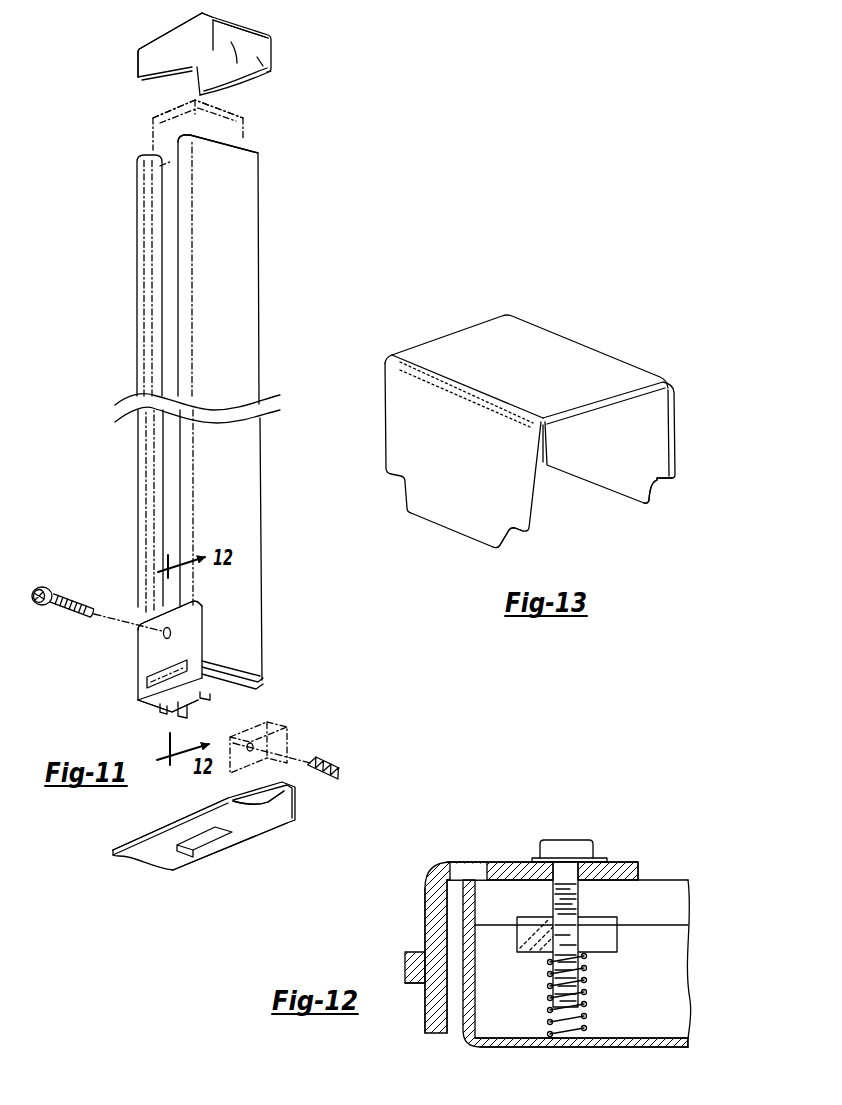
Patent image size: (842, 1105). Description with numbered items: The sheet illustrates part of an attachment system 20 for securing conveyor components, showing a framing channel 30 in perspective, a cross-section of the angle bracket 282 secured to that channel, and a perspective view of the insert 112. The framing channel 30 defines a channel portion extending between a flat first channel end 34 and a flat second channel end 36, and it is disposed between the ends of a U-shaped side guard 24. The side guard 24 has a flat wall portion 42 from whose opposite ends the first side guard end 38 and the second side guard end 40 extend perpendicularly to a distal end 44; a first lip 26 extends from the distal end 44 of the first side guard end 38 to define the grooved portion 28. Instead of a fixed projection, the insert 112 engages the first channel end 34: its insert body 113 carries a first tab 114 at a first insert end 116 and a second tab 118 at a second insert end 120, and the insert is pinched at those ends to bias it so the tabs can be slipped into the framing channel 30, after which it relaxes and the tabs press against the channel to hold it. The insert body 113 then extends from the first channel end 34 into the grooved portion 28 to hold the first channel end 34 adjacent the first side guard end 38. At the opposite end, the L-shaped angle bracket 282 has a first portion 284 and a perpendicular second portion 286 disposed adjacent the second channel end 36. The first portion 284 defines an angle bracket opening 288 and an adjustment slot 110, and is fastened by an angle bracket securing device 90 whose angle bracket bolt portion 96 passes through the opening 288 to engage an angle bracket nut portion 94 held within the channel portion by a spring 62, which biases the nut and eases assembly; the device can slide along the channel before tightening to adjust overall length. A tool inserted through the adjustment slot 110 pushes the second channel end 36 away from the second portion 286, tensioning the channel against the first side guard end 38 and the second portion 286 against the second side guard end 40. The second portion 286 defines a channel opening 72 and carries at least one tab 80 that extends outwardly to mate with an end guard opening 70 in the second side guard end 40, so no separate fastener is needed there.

In FIG. 11, the attachment system 20 is at (96, 371).
In FIG. 11, the side guard 24 is at (275, 40).
In FIG. 11, the first lip 26 is at (140, 60).
In FIG. 11, the grooved portion 28 is at (230, 44).
In FIG. 11, the framing channel 30 is at (247, 334).
In FIG. 12, the framing channel 30 is at (652, 880).
In FIG. 11, the first channel end 34 is at (260, 152).
In FIG. 11, the second channel end 36 is at (256, 682).
In FIG. 12, the second channel end 36 is at (463, 1046).
In FIG. 11, the first side guard end 38 is at (233, 32).
In FIG. 11, the second side guard end 40 is at (263, 822).
In FIG. 11, the flat wall portion 42 is at (265, 60).
In FIG. 11, the distal end 44 is at (203, 16).
In FIG. 11, the spring 62 is at (326, 760).
In FIG. 12, the spring 62 is at (587, 1010).
In FIG. 11, the end guard opening 70 is at (213, 834).
In FIG. 11, the channel opening 72 is at (180, 718).
In FIG. 12, the channel opening 72 is at (433, 970).
In FIG. 11, the tab 80 is at (163, 714).
In FIG. 12, the tab 80 is at (407, 984).
In FIG. 11, the angle bracket securing device 90 is at (45, 578).
In FIG. 12, the angle bracket securing device 90 is at (550, 900).
In FIG. 11, the angle bracket nut portion 94 is at (283, 728).
In FIG. 12, the angle bracket nut portion 94 is at (617, 945).
In FIG. 11, the angle bracket bolt portion 96 is at (30, 600).
In FIG. 12, the angle bracket bolt portion 96 is at (567, 838).
In FIG. 11, the adjustment slot 110 is at (147, 684).
In FIG. 12, the adjustment slot 110 is at (468, 870).
In FIG. 11, the insert 112 is at (253, 116).
In FIG. 13, the insert 112 is at (542, 433).
In FIG. 11, the insert body 113 is at (160, 137).
In FIG. 13, the insert body 113 is at (563, 352).
In FIG. 11, the first tab 114 is at (168, 157).
In FIG. 13, the first tab 114 is at (430, 510).
In FIG. 11, the first insert end 116 is at (166, 174).
In FIG. 13, the first insert end 116 is at (448, 530).
In FIG. 13, the second tab 118 is at (624, 478).
In FIG. 13, the second insert end 120 is at (600, 483).
In FIG. 11, the angle bracket 282 is at (208, 643).
In FIG. 12, the angle bracket 282 is at (503, 924).
In FIG. 11, the first portion 284 is at (137, 625).
In FIG. 12, the first portion 284 is at (623, 860).
In FIG. 11, the second portion 286 is at (158, 706).
In FIG. 12, the second portion 286 is at (425, 928).
In FIG. 11, the angle bracket opening 288 is at (160, 637).
In FIG. 12, the angle bracket opening 288 is at (550, 878).